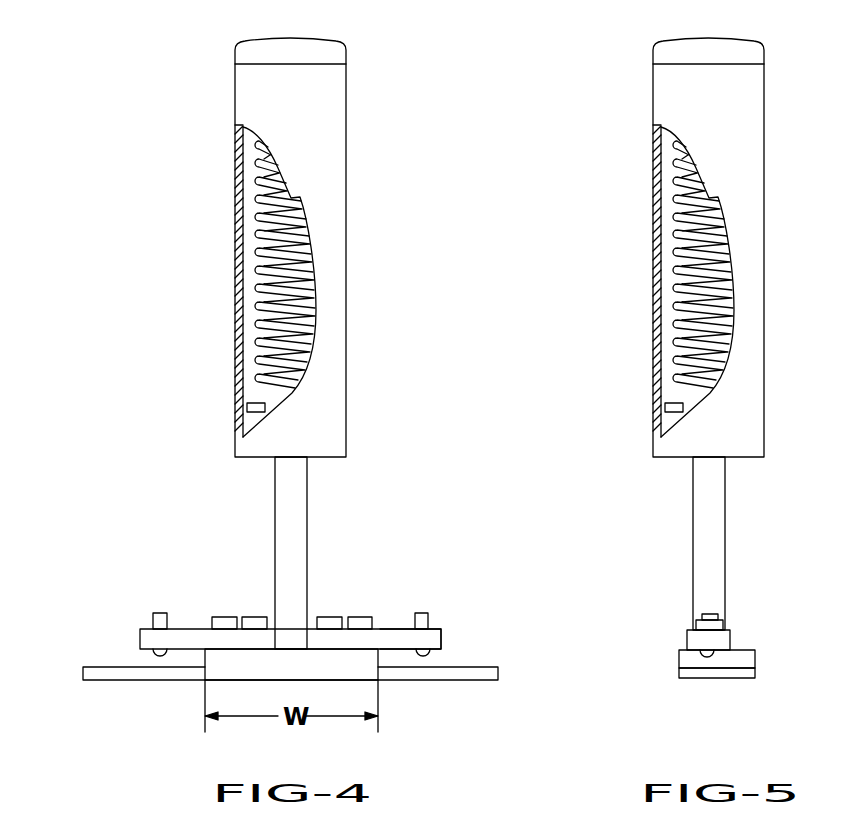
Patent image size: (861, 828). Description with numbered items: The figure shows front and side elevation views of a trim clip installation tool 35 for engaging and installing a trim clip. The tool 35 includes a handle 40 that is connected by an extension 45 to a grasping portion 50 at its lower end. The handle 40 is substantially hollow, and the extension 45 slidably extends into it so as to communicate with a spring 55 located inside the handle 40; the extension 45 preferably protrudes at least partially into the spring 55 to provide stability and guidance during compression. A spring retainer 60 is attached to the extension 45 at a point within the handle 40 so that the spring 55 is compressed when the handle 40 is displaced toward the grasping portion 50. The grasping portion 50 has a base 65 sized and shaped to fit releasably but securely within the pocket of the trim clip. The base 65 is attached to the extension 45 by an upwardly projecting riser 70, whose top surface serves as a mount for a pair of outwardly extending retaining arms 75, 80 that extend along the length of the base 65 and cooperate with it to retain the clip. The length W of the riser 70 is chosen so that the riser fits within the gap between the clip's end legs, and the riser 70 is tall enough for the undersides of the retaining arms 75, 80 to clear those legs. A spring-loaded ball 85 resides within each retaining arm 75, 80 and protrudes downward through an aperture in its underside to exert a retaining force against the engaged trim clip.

In FIG. 4, the trim clip installation tool 35 is at (198, 80).
In FIG. 5, the trim clip installation tool 35 is at (596, 44).
In FIG. 4, the handle 40 is at (332, 130).
In FIG. 5, the handle 40 is at (742, 130).
In FIG. 4, the extension 45 is at (295, 520).
In FIG. 5, the extension 45 is at (713, 518).
In FIG. 4, the grasping portion 50 is at (263, 657).
In FIG. 5, the grasping portion 50 is at (718, 640).
In FIG. 4, the spring 55 is at (262, 238).
In FIG. 5, the spring 55 is at (680, 238).
In FIG. 4, the spring retainer 60 is at (255, 408).
In FIG. 5, the spring retainer 60 is at (673, 408).
In FIG. 4, the base 65 is at (488, 680).
In FIG. 5, the base 65 is at (735, 676).
In FIG. 4, the riser 70 is at (265, 665).
In FIG. 5, the riser 70 is at (690, 660).
In FIG. 4, the retaining arm 75 is at (150, 635).
In FIG. 4, the retaining arm 80 is at (432, 638).
In FIG. 5, the retaining arm 80 is at (720, 644).
In FIG. 4, the spring-loaded ball 85 is at (165, 651).
In FIG. 5, the spring-loaded ball 85 is at (708, 653).